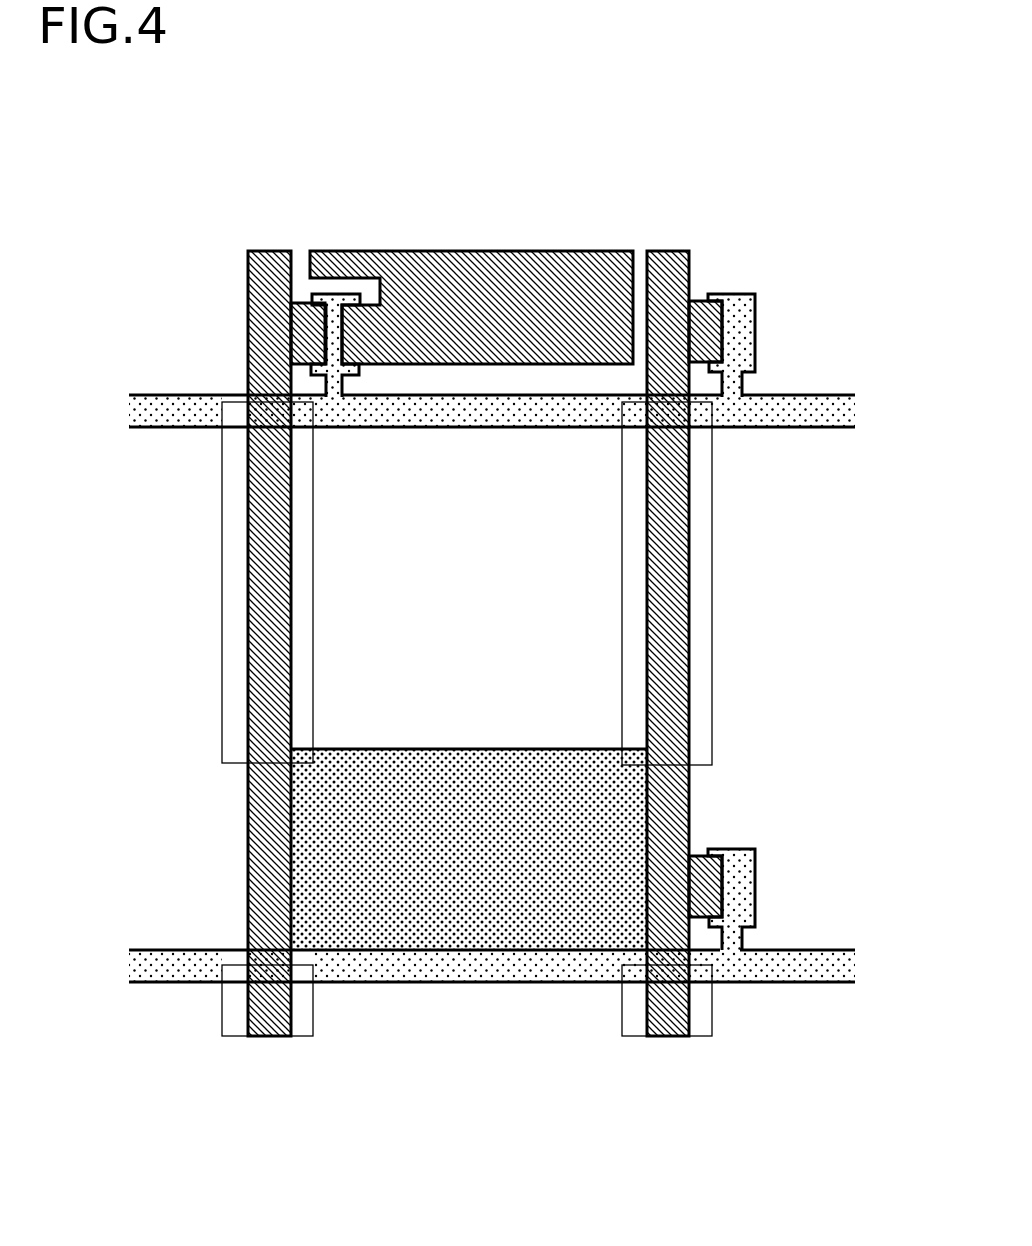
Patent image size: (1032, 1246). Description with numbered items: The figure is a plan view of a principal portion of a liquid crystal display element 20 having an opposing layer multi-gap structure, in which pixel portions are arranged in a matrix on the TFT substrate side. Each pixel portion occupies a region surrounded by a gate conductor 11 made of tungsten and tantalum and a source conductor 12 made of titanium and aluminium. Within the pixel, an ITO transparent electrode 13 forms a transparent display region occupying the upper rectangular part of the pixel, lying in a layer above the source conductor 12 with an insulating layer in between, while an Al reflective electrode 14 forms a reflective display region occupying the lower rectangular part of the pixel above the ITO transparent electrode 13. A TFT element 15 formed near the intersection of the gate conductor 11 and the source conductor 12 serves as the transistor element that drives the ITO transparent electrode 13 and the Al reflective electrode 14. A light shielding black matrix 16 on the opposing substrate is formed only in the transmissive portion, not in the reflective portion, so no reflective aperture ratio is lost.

The gate conductor 11 is at (807, 408).
The source conductor 12 is at (272, 262).
The ITO transparent electrode 13 is at (580, 555).
The Al reflective electrode 14 is at (625, 798).
The TFT element 15 is at (409, 319).
The black matrix 16 is at (712, 637).
The liquid crystal display element 20 is at (762, 254).